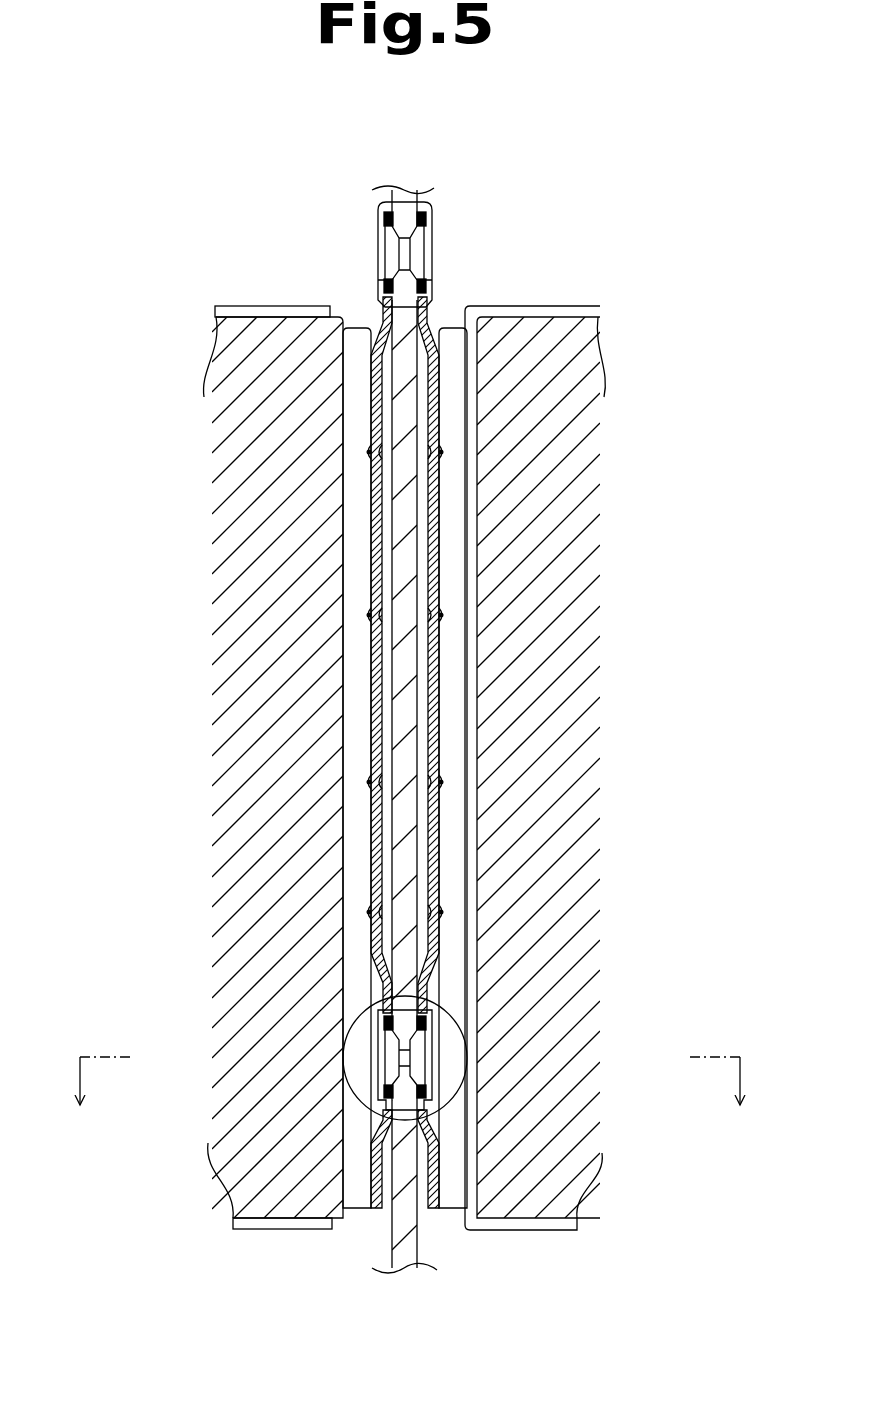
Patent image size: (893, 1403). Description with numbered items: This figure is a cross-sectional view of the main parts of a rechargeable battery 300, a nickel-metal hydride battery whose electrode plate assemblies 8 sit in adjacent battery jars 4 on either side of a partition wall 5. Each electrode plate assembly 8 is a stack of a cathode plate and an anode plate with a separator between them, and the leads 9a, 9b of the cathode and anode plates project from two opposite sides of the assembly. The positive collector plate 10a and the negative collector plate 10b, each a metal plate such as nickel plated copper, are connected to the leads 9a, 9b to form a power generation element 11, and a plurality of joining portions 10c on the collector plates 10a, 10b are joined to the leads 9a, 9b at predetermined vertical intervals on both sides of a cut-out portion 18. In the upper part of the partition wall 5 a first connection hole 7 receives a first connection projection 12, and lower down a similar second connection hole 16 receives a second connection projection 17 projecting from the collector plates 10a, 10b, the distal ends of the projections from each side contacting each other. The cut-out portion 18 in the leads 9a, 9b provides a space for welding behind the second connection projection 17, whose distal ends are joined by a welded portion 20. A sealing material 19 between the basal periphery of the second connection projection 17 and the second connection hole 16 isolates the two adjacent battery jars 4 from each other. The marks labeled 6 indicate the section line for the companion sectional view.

The rechargeable battery 300 is at (205, 262).
The battery jar 4 is at (190, 296).
The partition wall 5 is at (407, 398).
The section line 6 is at (410, 1101).
The first connection hole 7 is at (425, 240).
The electrode plate assembly 8 is at (379, 737).
The lead 9a is at (448, 486).
The lead 9b is at (360, 470).
The positive collector plate 10a is at (433, 521).
The negative collector plate 10b is at (376, 521).
The joining portions 10c is at (372, 452).
The power generation element 11 is at (280, 300).
The first connection projection 12 is at (398, 258).
The second connection hole 16 is at (430, 1045).
The second connection projection 17 is at (420, 1062).
The cut-out portion 18 is at (430, 1030).
The sealing material 19 is at (386, 216).
The welded portion 20 is at (440, 1052).